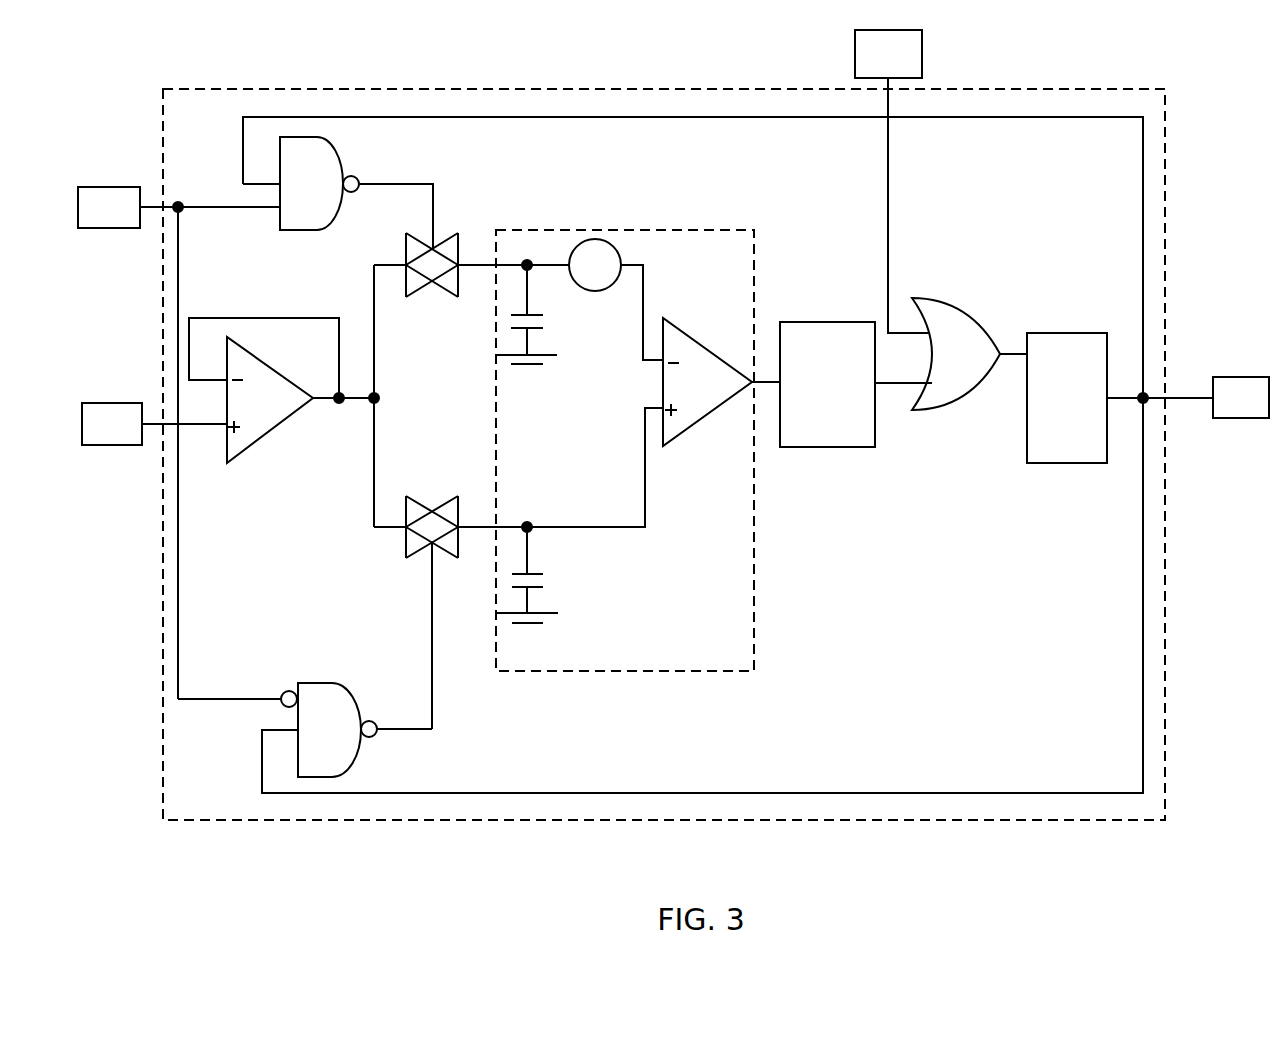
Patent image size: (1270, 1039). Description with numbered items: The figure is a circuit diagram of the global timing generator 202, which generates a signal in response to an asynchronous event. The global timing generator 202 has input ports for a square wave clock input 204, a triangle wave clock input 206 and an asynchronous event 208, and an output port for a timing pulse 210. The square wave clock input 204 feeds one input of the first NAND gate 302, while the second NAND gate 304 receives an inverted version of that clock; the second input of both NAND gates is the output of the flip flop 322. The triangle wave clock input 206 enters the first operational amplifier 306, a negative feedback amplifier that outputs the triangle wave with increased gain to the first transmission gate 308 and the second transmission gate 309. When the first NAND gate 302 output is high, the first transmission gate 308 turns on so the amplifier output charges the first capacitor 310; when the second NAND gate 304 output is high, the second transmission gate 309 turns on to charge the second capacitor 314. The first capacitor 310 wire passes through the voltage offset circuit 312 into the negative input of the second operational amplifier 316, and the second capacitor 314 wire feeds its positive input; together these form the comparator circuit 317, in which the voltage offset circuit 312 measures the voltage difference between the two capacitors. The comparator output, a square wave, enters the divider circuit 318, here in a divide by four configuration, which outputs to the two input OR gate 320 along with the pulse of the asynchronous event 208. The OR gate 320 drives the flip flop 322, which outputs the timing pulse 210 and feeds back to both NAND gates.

The global timing generator 202 is at (280, 88).
The square wave clock input 204 is at (179, 443).
The triangle wave clock input 206 is at (154, 424).
The asynchronous event 208 is at (892, 181).
The timing pulse 210 is at (1188, 397).
The first NAND gate 302 is at (310, 137).
The second NAND gate 304 is at (327, 682).
The first operational amplifier 306 is at (270, 433).
The first transmission gate 308 is at (432, 282).
The second transmission gate 309 is at (432, 511).
The first capacitor 310 is at (532, 322).
The voltage offset circuit 312 is at (615, 248).
The second capacitor 314 is at (533, 588).
The second operational amplifier 316 is at (707, 415).
The comparator circuit 317 is at (625, 671).
The divider circuit 318 is at (856, 384).
The two input OR gate 320 is at (963, 308).
The flip flop 322 is at (1067, 398).